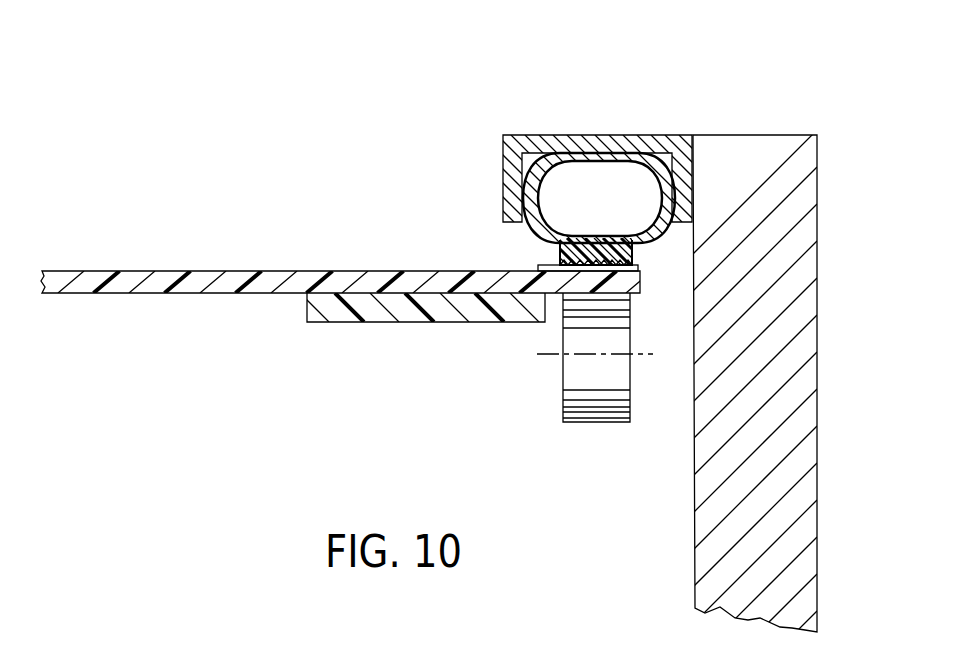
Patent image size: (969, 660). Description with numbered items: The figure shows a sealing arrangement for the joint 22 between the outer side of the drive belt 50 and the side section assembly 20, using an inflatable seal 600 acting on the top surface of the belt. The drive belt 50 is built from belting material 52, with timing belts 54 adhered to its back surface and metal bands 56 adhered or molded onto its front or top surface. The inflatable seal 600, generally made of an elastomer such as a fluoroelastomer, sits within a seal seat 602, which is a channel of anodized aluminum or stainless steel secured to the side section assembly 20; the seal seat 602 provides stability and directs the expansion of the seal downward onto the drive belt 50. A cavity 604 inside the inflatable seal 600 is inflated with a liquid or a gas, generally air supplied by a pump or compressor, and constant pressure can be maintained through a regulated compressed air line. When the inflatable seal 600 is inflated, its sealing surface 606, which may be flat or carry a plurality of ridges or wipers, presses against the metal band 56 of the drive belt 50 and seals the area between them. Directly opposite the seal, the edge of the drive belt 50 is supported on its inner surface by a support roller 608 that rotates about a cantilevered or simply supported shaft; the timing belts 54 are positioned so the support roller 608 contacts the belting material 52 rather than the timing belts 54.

The side section assembly 20 is at (819, 451).
The joint 22 is at (678, 116).
The drive belt 50 is at (181, 258).
The belting material 52 is at (182, 293).
The timing belt 54 is at (378, 322).
The metal band 56 is at (548, 266).
The inflatable seal 600 is at (593, 147).
The seal seat 602 is at (530, 135).
The cavity 604 is at (608, 183).
The sealing surface 606 is at (627, 252).
The support roller 608 is at (563, 378).